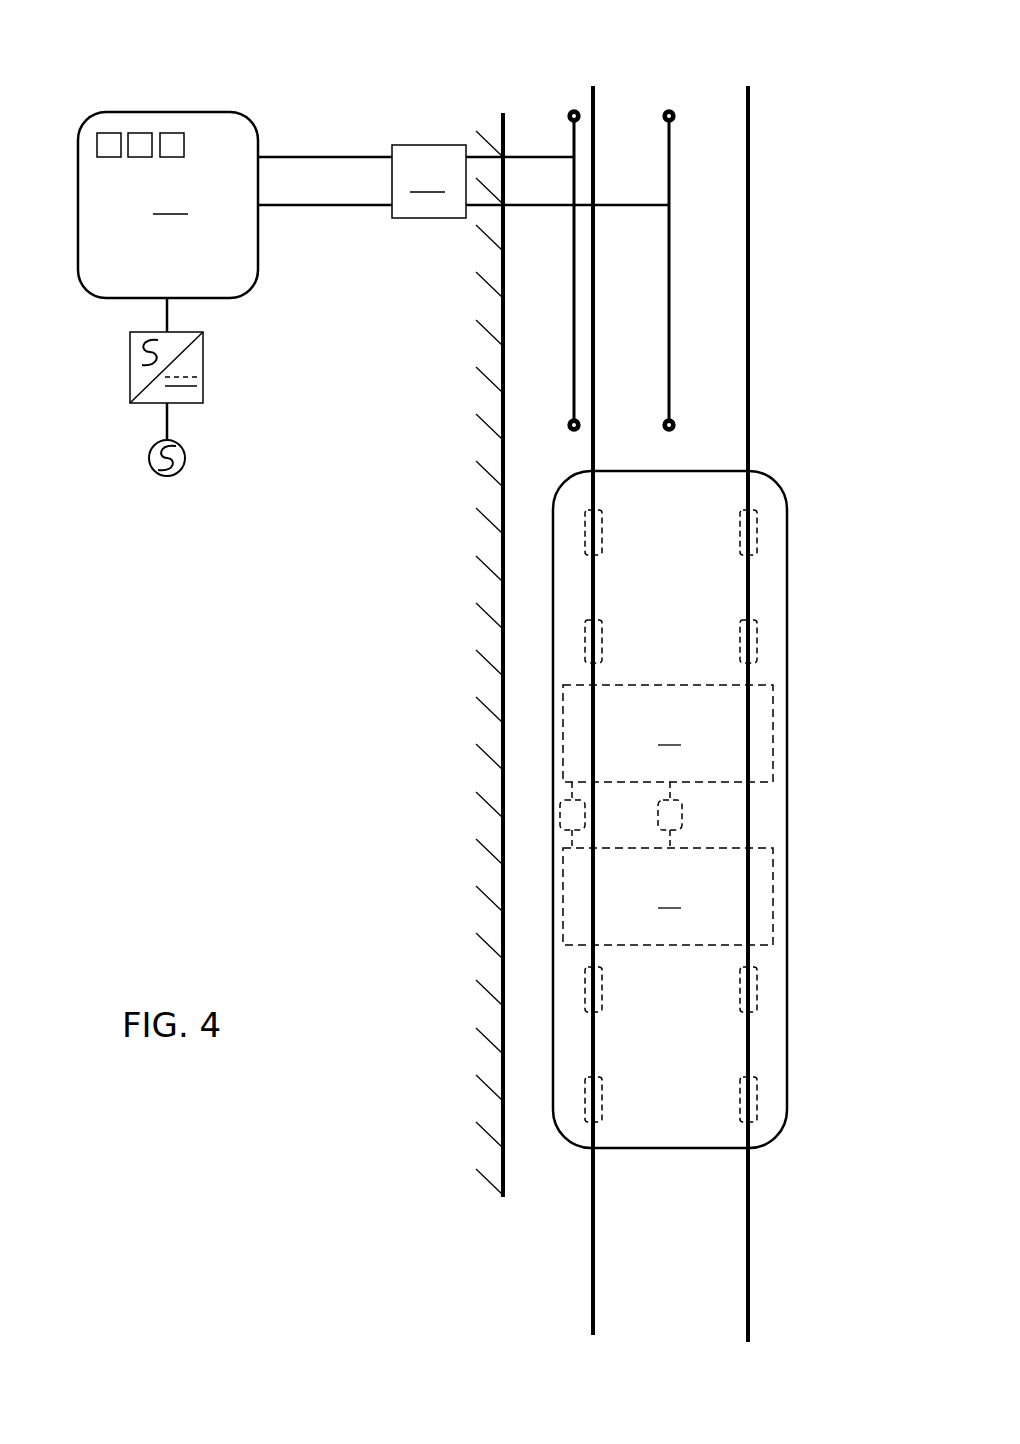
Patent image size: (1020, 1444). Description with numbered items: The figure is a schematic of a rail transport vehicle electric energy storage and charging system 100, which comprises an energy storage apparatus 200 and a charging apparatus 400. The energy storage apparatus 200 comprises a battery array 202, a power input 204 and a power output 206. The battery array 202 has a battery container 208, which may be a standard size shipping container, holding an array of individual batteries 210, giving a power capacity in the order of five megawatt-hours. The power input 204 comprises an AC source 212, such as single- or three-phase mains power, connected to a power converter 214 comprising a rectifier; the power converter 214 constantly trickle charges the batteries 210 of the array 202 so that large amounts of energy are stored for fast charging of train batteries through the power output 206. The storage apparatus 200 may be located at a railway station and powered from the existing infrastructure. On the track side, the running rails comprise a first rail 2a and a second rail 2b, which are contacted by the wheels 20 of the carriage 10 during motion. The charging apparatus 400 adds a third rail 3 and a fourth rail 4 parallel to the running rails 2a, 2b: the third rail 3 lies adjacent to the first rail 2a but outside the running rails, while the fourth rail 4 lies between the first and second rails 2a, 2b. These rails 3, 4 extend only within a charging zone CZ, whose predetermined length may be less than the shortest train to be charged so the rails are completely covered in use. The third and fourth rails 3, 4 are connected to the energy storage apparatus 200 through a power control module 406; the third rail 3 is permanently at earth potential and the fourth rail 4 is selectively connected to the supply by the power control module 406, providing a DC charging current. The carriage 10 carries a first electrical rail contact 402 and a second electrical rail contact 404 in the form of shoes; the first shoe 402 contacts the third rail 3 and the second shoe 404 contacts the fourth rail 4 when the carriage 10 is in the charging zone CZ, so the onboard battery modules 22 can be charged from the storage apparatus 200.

The energy storage and charging system 100 is at (896, 106).
The energy storage apparatus 200 is at (393, 85).
The battery array 202 is at (168, 205).
The power input 204 is at (78, 302).
The power output 206 is at (326, 232).
The battery container 208 is at (77, 188).
The individual batteries 210 is at (172, 140).
The AC source 212 is at (185, 459).
The power converter 214 is at (197, 363).
The charging apparatus 400 is at (748, 85).
The first electrical rail contact 402 is at (567, 815).
The second electrical rail contact 404 is at (680, 815).
The power control module 406 is at (429, 181).
The third rail 3 is at (573, 358).
The fourth rail 4 is at (668, 358).
The first rail 2a is at (594, 455).
The second rail 2b is at (750, 455).
The carriage 10 is at (814, 845).
The wheels 20 is at (592, 535).
The energy storage / drive units 22 is at (668, 815).
The charging zone CZ is at (837, 115).